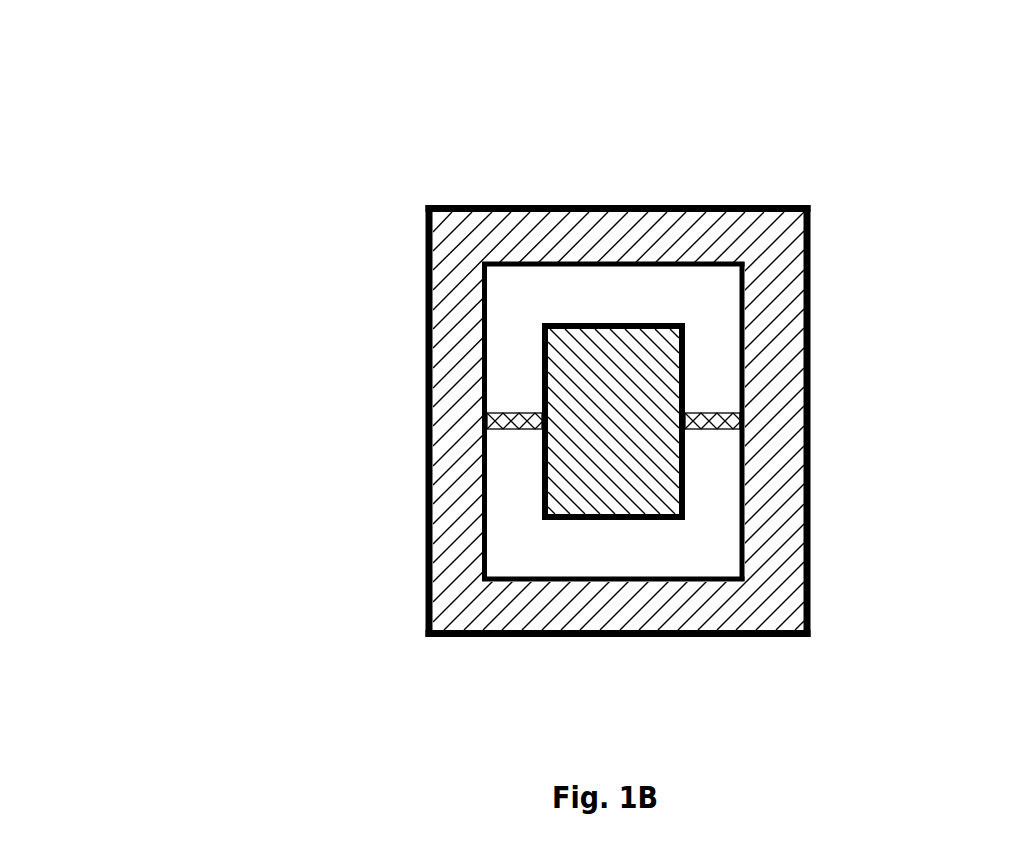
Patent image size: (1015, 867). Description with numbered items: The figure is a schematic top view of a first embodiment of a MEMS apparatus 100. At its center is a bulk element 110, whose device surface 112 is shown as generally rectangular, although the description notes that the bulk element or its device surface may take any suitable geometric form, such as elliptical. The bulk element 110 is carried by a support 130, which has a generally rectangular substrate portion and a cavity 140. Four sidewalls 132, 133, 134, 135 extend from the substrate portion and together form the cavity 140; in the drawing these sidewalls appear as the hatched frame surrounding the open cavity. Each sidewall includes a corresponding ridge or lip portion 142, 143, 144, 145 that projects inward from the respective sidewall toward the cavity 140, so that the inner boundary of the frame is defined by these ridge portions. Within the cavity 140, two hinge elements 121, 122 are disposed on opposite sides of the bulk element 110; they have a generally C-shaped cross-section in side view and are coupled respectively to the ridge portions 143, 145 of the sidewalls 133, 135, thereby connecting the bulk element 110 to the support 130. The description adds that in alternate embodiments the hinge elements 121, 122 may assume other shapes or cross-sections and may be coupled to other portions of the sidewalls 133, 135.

The MEMS apparatus 100 is at (186, 134).
The bulk element 110 is at (570, 326).
The device surface 112 is at (626, 392).
The hinge element 121 is at (510, 413).
The hinge element 122 is at (716, 413).
The support 130 is at (413, 602).
The sidewall 132 is at (608, 208).
The sidewall 133 is at (428, 556).
The sidewall 134 is at (630, 636).
The sidewall 135 is at (807, 509).
The cavity 140 is at (720, 470).
The ridge portion 142 is at (624, 265).
The ridge portion 143 is at (485, 343).
The ridge portion 144 is at (555, 579).
The ridge portion 145 is at (744, 340).